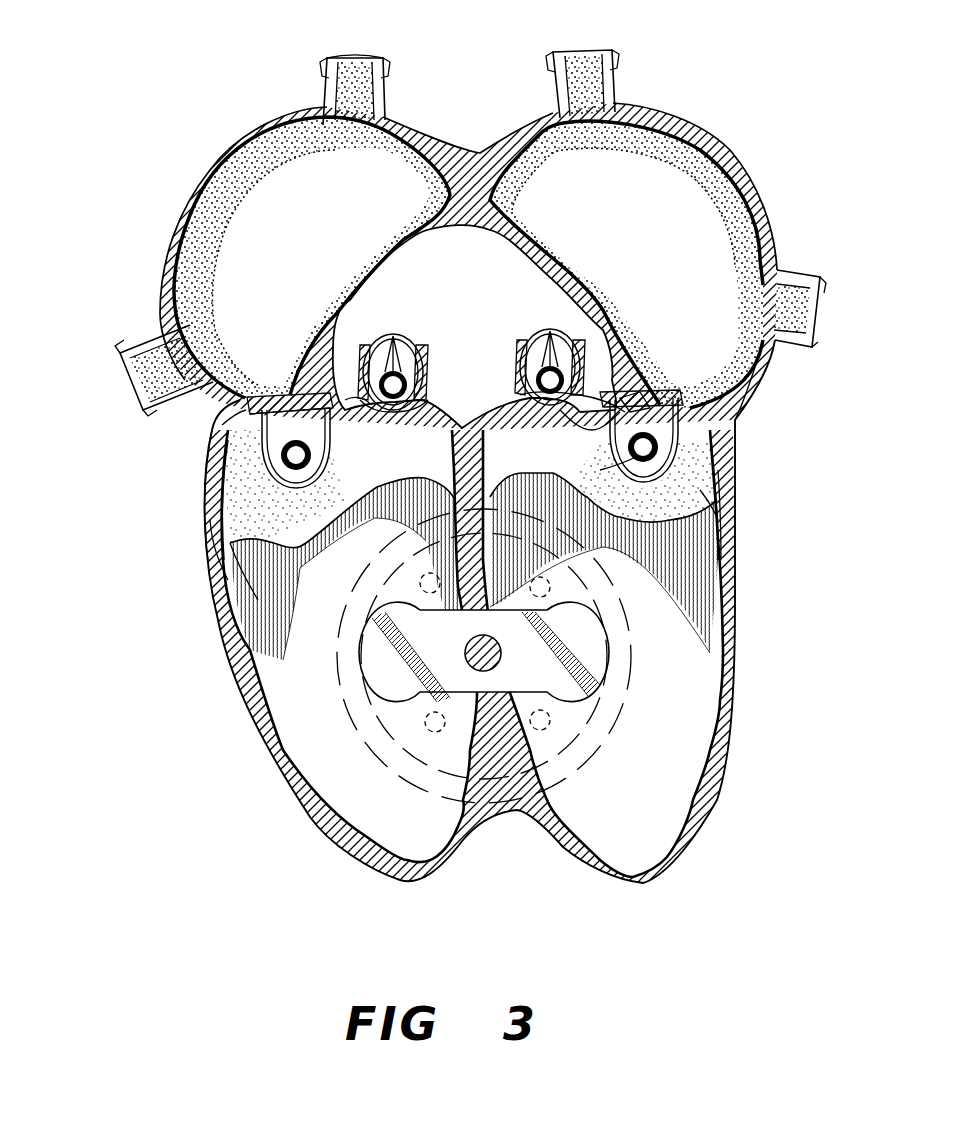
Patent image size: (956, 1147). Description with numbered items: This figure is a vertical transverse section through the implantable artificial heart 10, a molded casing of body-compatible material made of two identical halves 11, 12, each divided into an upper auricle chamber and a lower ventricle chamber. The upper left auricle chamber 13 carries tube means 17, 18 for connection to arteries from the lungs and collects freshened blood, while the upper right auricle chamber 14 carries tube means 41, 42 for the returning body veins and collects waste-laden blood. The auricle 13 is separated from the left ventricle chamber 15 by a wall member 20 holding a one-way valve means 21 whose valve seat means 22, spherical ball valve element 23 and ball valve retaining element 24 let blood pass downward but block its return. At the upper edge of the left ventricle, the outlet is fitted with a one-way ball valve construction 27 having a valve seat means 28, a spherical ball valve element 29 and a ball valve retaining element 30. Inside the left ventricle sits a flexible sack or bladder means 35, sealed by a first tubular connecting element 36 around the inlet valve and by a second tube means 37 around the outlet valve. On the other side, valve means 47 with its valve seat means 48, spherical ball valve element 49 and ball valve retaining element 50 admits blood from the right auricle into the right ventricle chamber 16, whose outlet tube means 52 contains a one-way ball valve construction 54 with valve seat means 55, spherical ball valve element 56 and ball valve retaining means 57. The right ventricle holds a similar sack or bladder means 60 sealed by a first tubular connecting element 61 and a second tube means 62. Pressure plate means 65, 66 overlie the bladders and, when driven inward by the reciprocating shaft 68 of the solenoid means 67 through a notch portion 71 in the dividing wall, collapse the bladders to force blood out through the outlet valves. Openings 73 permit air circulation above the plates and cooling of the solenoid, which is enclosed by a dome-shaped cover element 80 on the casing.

The implantable artificial heart 10 is at (745, 688).
The first half of the casing 11 is at (216, 444).
The second half of the casing 12 is at (236, 449).
The upper left auricle chamber 13 is at (676, 246).
The upper right auricle chamber 14 is at (306, 242).
The left ventricle chamber 15 is at (727, 458).
The right ventricle chamber 16 is at (221, 498).
The tube means 17 is at (610, 67).
The tube means 18 is at (821, 278).
The wall member 20 is at (729, 363).
The valve means 21 is at (624, 439).
The valve seat means 22 is at (639, 384).
The spherical ball valve element 23 is at (651, 454).
The ball valve retaining element 24 is at (631, 453).
The one-way ball valve construction 27 is at (557, 343).
The valve seat means 28 is at (552, 435).
The spherical ball valve element 29 is at (558, 387).
The ball valve retaining element 30 is at (531, 344).
The sack or bladder means 35 is at (722, 483).
The first tubular connecting element 36 is at (590, 426).
The second tube means 37 is at (534, 405).
The tube means 41 is at (125, 351).
The tube means 42 is at (345, 64).
The valve means 47 is at (269, 393).
The valve seat means 48 is at (296, 396).
The spherical ball valve element 49 is at (304, 462).
The ball valve retaining element 50 is at (317, 458).
The outlet tube means 52 is at (374, 352).
The one-way ball valve construction 54 is at (419, 360).
The valve seat means 55 is at (428, 379).
The spherical ball valve element 56 is at (401, 392).
The ball valve retaining means 57 is at (399, 358).
The sack or bladder means 60 is at (266, 521).
The first tubular connecting element 61 is at (224, 430).
The second tube means 62 is at (369, 396).
The pressure plate means 65 is at (667, 754).
The pressure plate means 66 is at (380, 798).
The solenoid means 67 is at (611, 666).
The reciprocating shaft 68 is at (495, 658).
The notch portion 71 is at (469, 610).
The openings 73 is at (420, 583).
The dome-shaped cover element 80 is at (614, 703).